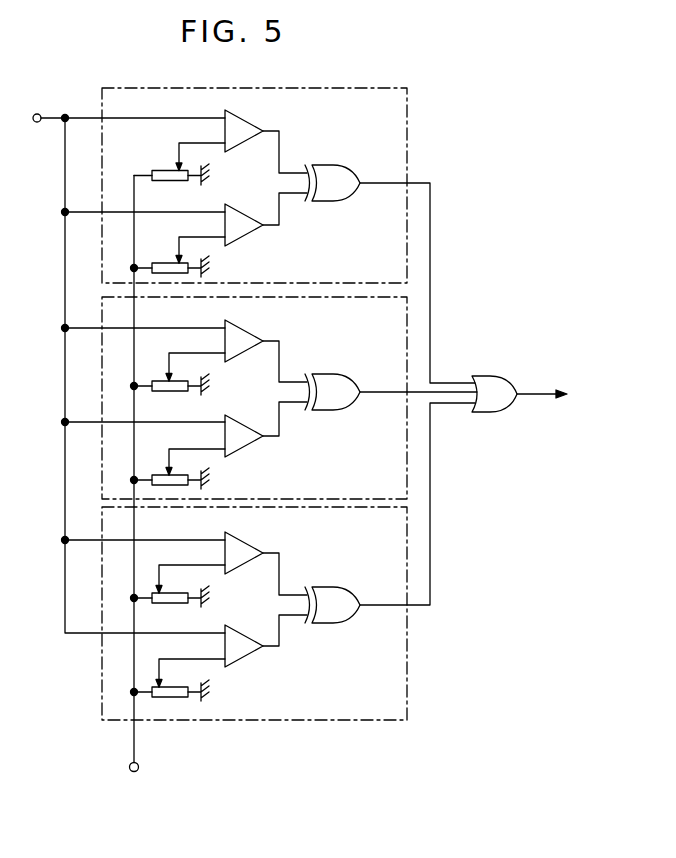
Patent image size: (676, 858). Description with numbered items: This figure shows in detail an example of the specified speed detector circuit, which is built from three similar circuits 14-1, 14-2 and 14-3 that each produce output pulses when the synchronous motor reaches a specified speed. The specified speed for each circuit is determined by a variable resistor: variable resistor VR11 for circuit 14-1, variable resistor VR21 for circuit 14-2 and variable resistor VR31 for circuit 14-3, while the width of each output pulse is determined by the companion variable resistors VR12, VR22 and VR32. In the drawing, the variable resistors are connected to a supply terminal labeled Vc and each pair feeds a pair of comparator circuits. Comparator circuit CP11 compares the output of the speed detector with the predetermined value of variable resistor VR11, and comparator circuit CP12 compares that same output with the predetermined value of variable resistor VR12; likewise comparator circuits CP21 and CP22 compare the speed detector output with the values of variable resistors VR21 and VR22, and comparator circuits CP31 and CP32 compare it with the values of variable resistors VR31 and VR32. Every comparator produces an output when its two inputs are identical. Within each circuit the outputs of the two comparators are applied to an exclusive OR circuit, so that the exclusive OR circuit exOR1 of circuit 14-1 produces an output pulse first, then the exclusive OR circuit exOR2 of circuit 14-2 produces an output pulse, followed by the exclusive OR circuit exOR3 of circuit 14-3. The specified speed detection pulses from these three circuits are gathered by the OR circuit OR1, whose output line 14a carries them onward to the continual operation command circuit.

The circuit 14-1 is at (408, 148).
The circuit 14-2 is at (407, 330).
The circuit 14-3 is at (407, 545).
The output of OR gate 14a is at (565, 394).
The comparator circuit CP11 is at (237, 117).
The comparator circuit CP12 is at (249, 216).
The comparator circuit CP21 is at (237, 327).
The comparator circuit CP22 is at (248, 423).
The comparator circuit CP31 is at (251, 553).
The comparator circuit CP32 is at (239, 635).
The variable resistor VR11 is at (179, 176).
The variable resistor VR12 is at (163, 262).
The variable resistor VR21 is at (186, 392).
The variable resistor VR22 is at (157, 474).
The variable resistor VR31 is at (148, 592).
The variable resistor VR32 is at (148, 686).
The exclusive OR circuit exOR1 is at (350, 159).
The exclusive OR circuit exOR2 is at (352, 375).
The exclusive OR circuit exOR3 is at (350, 584).
The OR circuit OR1 is at (506, 410).
The control voltage terminal Vc is at (140, 490).